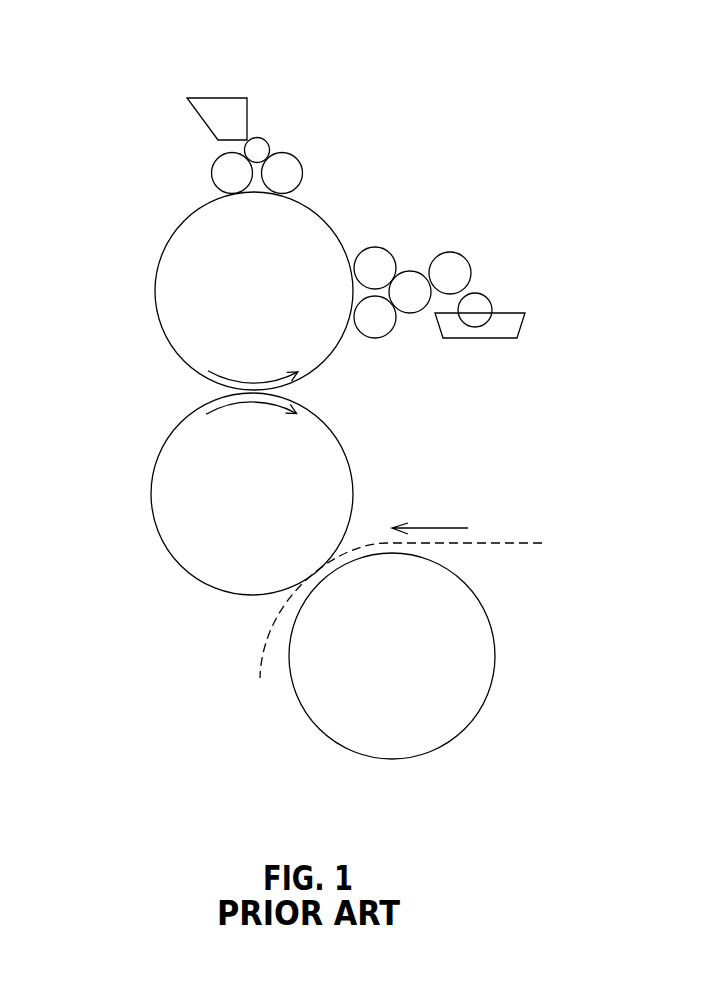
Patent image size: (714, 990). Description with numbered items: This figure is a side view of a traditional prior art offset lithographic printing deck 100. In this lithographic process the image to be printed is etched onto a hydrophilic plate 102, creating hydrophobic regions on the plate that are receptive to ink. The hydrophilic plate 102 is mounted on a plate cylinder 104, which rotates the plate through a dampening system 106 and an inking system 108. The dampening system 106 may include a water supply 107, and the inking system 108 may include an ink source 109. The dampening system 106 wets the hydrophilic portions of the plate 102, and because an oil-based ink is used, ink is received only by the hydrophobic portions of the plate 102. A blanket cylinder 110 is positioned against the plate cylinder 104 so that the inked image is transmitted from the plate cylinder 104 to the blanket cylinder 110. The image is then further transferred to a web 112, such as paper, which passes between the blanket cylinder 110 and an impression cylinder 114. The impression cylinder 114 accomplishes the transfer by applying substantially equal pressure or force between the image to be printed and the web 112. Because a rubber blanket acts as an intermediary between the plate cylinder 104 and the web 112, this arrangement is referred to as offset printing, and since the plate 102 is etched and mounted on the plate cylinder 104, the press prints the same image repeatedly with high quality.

The offset lithographic printing deck 100 is at (340, 20).
The hydrophilic plate 102 is at (170, 348).
The plate cylinder 104 is at (193, 290).
The dampening system 106 is at (408, 332).
The water supply 107 is at (500, 340).
The inking system 108 is at (267, 128).
The ink source 109 is at (205, 97).
The blanket cylinder 110 is at (190, 528).
The web 112 is at (503, 543).
The impression cylinder 114 is at (425, 712).